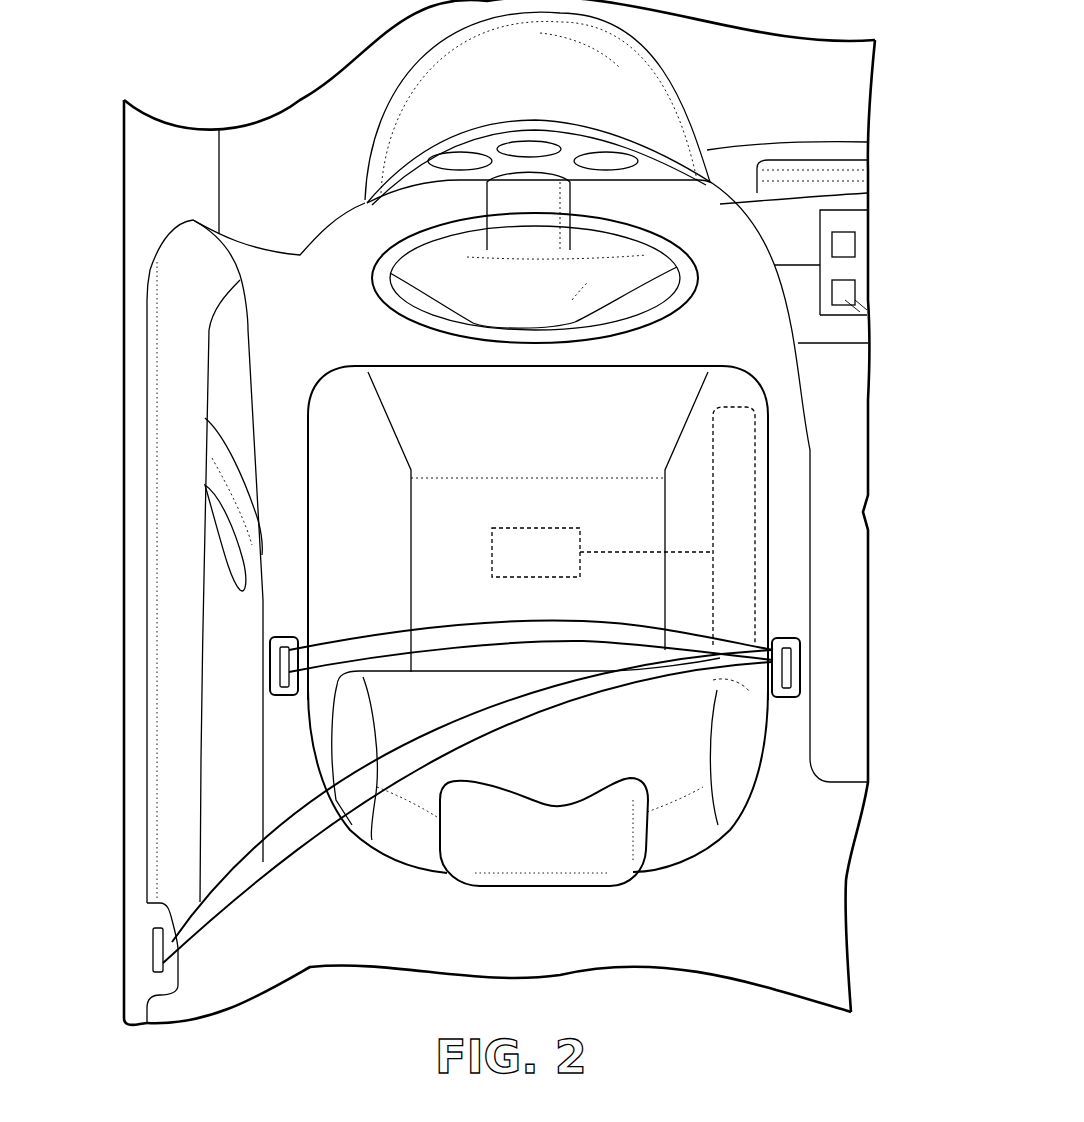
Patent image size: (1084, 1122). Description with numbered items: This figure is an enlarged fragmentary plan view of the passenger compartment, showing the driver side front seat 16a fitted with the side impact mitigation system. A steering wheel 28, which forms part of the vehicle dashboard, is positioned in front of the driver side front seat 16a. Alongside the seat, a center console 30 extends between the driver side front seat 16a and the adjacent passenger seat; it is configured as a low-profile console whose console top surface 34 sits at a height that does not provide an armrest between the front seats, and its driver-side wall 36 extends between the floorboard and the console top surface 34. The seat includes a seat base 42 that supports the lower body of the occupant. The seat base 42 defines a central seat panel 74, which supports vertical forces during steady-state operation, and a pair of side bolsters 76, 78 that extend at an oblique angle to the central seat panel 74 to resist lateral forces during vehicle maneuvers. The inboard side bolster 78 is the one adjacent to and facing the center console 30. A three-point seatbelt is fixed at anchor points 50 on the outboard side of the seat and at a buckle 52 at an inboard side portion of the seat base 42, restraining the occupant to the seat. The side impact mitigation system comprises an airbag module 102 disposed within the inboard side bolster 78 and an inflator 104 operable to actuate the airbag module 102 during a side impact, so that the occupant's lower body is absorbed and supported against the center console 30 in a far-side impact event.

The driver side front seat 16a is at (377, 550).
The steering wheel 28 is at (667, 240).
The center console 30 is at (845, 500).
The console top surface 34 is at (843, 742).
The driver-side wall 36 is at (808, 748).
The seat base 42 is at (347, 488).
The anchor points 50 is at (270, 678).
The buckle 52 is at (802, 667).
The central seat panel 74 is at (440, 595).
The side bolster 76 is at (762, 437).
The inboard side bolster 78 is at (328, 520).
The airbag module 102 is at (752, 476).
The inflator 104 is at (520, 563).